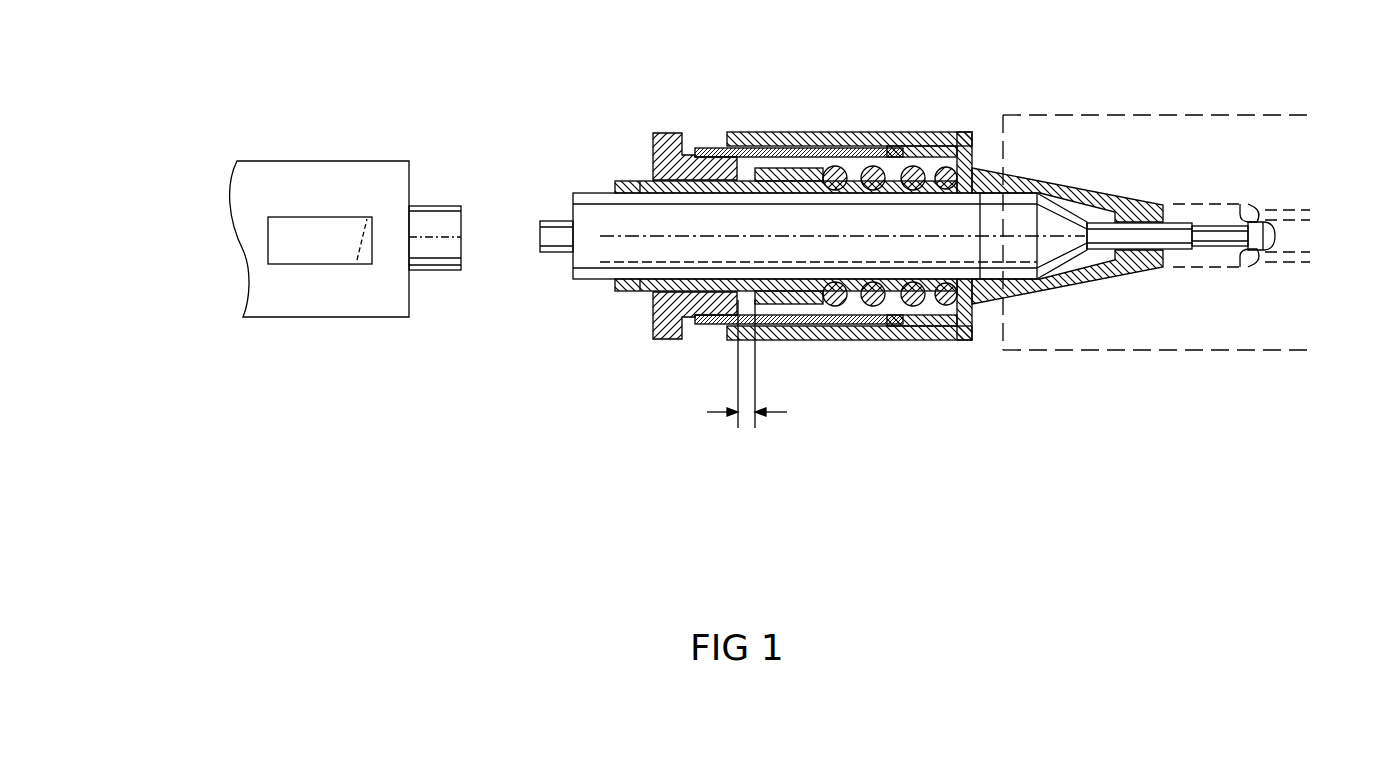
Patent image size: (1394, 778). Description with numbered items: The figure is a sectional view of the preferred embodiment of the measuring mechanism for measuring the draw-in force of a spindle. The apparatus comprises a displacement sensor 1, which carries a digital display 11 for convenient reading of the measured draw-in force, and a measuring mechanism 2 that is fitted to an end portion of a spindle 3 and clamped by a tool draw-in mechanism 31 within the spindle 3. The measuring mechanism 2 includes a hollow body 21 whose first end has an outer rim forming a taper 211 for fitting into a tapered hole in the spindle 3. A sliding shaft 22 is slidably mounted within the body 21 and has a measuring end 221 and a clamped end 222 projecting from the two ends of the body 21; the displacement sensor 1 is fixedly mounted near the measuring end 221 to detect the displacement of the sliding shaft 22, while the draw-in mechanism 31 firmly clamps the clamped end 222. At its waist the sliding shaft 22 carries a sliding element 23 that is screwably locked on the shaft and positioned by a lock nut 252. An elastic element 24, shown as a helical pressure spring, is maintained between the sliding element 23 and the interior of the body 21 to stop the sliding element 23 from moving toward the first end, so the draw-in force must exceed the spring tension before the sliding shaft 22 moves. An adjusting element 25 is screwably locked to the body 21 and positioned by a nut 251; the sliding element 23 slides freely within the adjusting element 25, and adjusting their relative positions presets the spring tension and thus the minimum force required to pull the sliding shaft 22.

The displacement sensor 1 is at (314, 293).
The digital display 11 is at (273, 230).
The measuring mechanism 2 is at (880, 311).
The hollow body 21 is at (945, 209).
The taper 211 is at (1032, 292).
The sliding shaft 22 is at (880, 276).
The measuring end 221 is at (540, 238).
The clamped end 222 is at (1262, 319).
The sliding element 23 is at (792, 300).
The elastic element 24 is at (863, 300).
The adjusting element 25 is at (662, 133).
The nut 251 is at (745, 132).
The lock nut 252 is at (636, 292).
The spindle 3 is at (1192, 211).
The tool draw-in mechanism 31 is at (1288, 210).